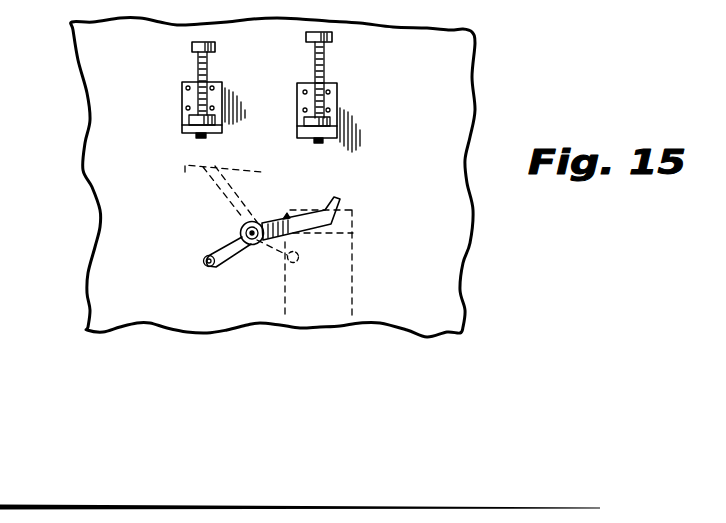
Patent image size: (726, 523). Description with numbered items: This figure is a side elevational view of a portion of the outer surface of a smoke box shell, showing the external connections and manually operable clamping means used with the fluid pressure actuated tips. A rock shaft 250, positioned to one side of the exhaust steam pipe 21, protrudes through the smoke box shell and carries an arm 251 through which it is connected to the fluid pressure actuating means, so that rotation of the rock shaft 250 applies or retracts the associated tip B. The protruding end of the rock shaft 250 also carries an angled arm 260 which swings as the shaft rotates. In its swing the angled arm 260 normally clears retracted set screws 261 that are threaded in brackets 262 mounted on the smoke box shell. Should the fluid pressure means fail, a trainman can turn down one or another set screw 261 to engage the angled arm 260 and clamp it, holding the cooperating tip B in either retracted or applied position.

The set screw 261 is at (306, 36).
The bracket 262 is at (305, 133).
The angled arm 260 is at (330, 205).
The rock shaft 250 is at (242, 230).
The arm 251 is at (232, 248).
The exhaust steam pipe 21 is at (338, 293).
The tip B is at (357, 227).